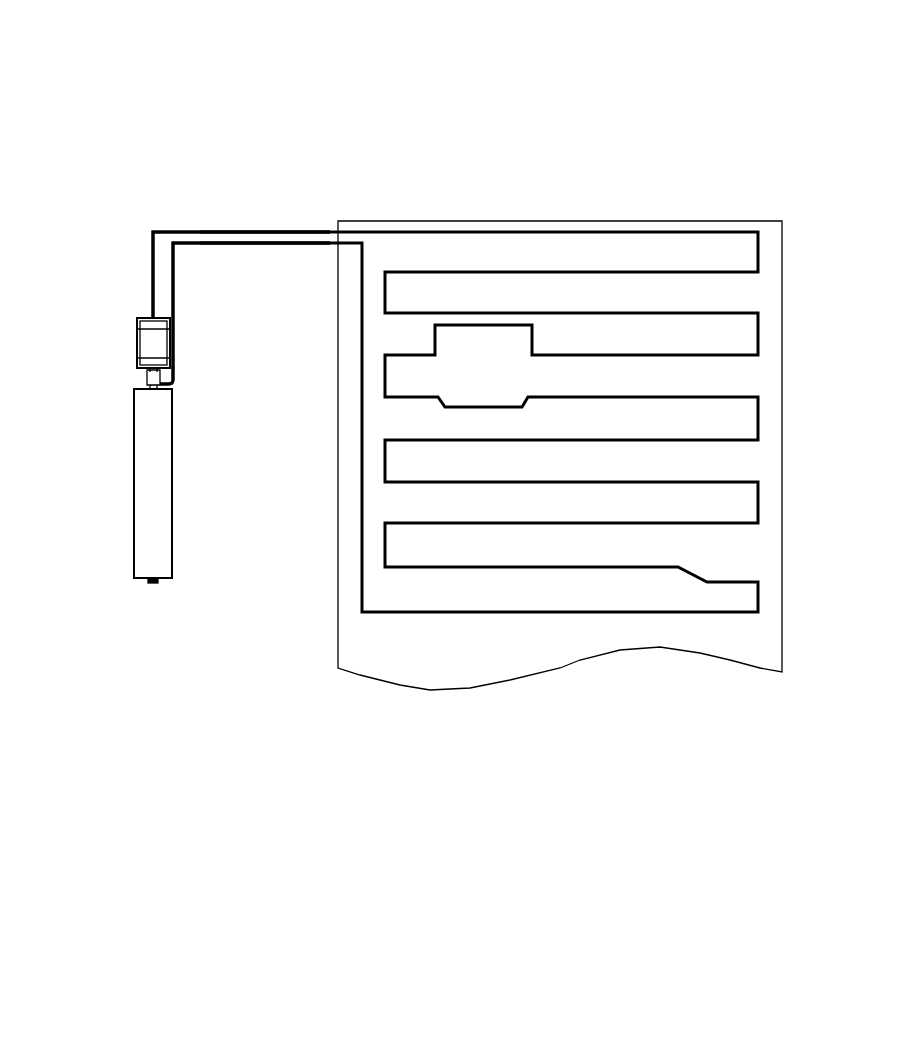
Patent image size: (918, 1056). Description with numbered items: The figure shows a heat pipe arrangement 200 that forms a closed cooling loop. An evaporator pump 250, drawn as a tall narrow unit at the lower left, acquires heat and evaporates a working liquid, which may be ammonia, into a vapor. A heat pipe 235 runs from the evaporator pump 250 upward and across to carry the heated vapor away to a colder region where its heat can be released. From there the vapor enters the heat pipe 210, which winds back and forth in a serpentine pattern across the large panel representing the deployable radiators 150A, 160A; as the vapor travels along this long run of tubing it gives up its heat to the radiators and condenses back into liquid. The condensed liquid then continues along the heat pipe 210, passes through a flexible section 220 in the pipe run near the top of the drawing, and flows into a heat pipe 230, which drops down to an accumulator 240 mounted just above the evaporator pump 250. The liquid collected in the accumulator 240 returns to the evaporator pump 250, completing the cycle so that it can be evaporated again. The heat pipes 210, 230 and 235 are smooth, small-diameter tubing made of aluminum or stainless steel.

The heat pipe arrangement 200 is at (718, 52).
The heat pipe 210 is at (447, 224).
The flexible section 220 is at (247, 221).
The heat pipe 230 is at (143, 253).
The heat pipe 235 is at (180, 297).
The accumulator 240 is at (131, 334).
The evaporator pump 250 is at (178, 456).
The deployable radiator 150A is at (592, 423).
The deployable radiator 160A is at (720, 206).